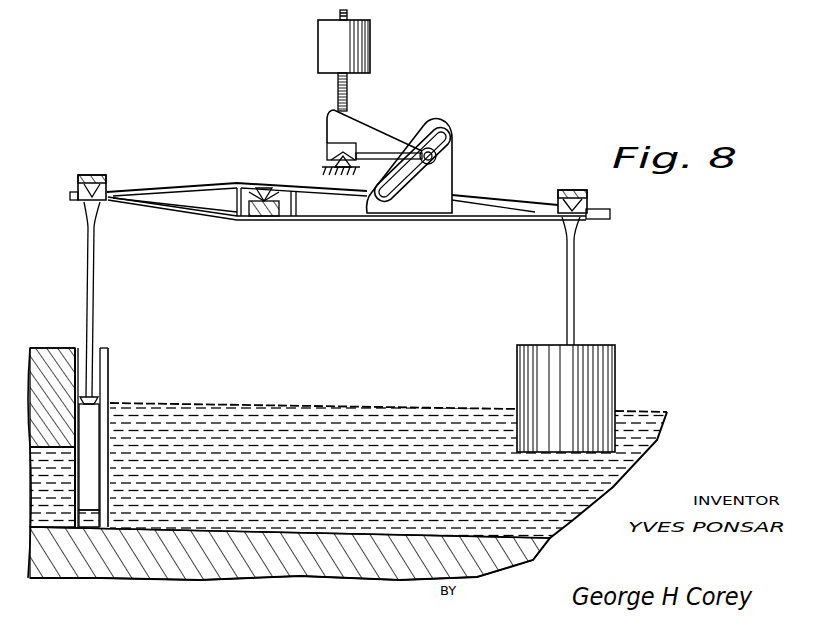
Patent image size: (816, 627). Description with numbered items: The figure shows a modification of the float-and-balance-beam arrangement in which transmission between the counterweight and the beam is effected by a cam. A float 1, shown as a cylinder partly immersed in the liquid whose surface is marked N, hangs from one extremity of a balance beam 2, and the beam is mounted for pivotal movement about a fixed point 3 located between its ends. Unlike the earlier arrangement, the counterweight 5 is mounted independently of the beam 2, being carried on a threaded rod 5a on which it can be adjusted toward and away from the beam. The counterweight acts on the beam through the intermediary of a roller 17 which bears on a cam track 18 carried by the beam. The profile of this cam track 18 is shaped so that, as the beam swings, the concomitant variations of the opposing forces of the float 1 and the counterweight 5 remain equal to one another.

The float 1 is at (528, 383).
The balance beam 2 is at (185, 187).
The central knife-edge fulcrum 3 is at (262, 203).
The motor 5 is at (370, 53).
The threaded screw 5a is at (347, 93).
The bracket plate 17 is at (422, 180).
The loop slot 18 is at (420, 166).
The liquid level N is at (419, 403).